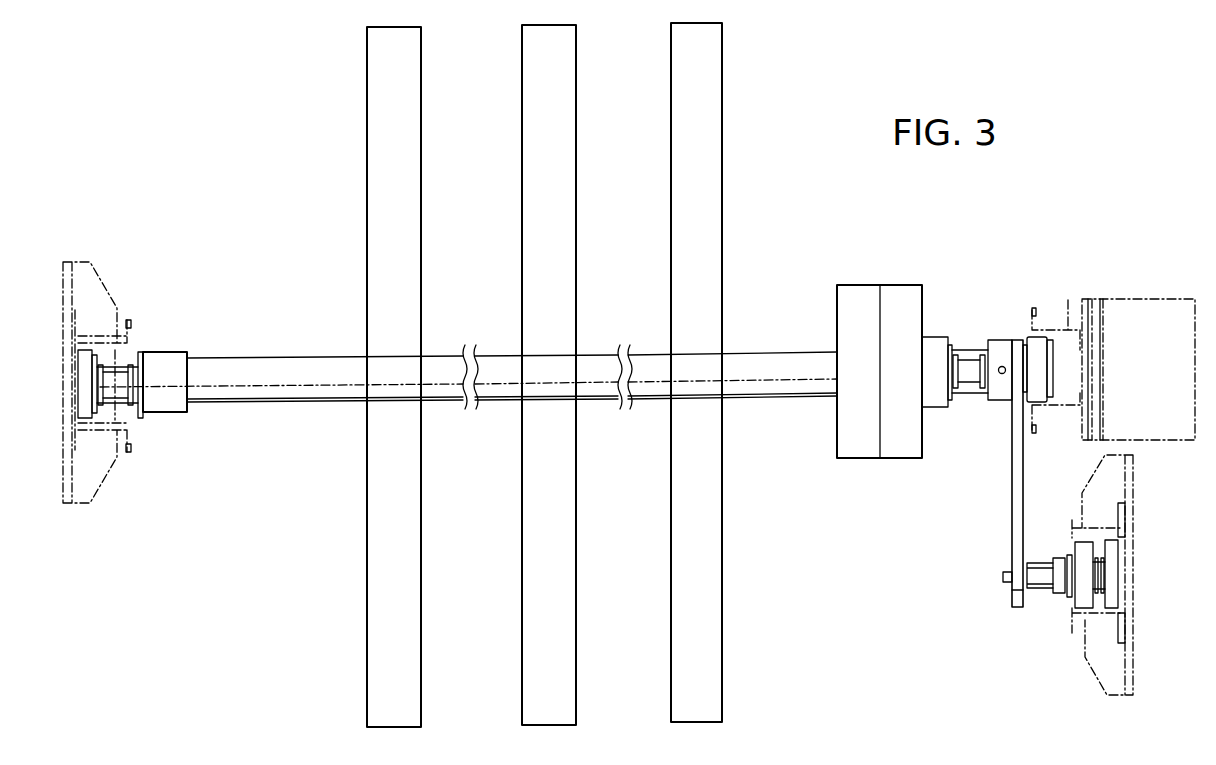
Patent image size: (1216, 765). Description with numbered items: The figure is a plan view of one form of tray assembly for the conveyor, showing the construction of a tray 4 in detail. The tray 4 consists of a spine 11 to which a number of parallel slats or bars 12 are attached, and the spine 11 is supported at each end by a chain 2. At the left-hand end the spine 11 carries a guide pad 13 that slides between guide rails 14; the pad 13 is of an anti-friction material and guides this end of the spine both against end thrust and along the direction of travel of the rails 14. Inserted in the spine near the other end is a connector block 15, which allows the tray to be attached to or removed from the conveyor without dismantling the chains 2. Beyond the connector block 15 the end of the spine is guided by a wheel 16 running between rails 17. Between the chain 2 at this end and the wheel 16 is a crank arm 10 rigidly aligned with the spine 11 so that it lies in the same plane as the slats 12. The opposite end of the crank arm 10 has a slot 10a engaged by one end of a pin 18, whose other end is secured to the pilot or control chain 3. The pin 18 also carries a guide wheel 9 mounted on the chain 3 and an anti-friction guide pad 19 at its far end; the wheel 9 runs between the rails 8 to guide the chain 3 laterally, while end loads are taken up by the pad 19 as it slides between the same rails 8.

The chain 2 is at (120, 372).
The pilot or control chain 3 is at (1068, 556).
The tray 4 is at (566, 375).
The rails 8 is at (1123, 532).
The guide wheel 9 is at (1082, 600).
The crank arm 10 is at (1012, 458).
The slot 10a is at (1011, 588).
The spine 11 is at (594, 356).
The slats or bars 12 is at (672, 134).
The guide pad 13 is at (87, 352).
The guide rails 14 is at (130, 322).
The connector block 15 is at (878, 458).
The wheel 16 is at (1036, 340).
The rails 17 is at (1068, 322).
The pin 18 is at (1004, 573).
The anti-friction guide pad 19 is at (1113, 572).